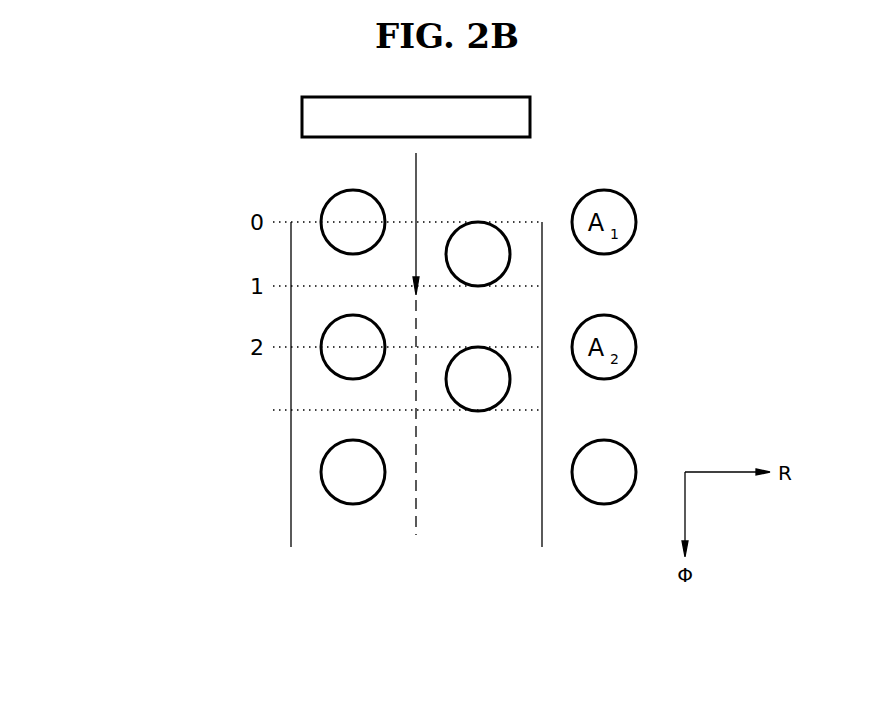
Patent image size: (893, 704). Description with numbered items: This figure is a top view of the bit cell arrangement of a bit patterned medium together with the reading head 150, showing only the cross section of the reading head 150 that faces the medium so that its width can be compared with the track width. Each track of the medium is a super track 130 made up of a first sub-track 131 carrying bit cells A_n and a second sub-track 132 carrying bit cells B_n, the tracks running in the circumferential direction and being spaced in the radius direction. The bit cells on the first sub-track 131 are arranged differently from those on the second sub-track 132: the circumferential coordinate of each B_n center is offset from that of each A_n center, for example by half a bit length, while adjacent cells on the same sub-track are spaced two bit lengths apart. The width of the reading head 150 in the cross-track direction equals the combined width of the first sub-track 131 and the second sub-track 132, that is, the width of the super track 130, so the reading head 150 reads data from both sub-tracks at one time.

The reading head 150 is at (530, 117).
The super track 130 is at (416, 411).
The first sub-track 131 is at (353, 528).
The second sub-track 132 is at (478, 408).